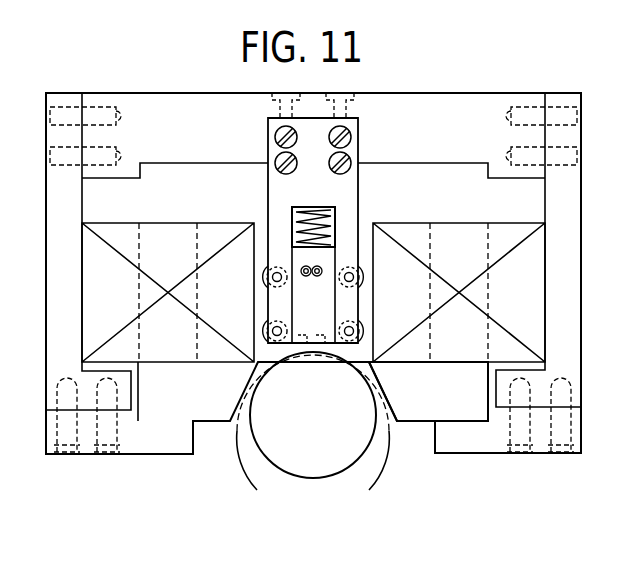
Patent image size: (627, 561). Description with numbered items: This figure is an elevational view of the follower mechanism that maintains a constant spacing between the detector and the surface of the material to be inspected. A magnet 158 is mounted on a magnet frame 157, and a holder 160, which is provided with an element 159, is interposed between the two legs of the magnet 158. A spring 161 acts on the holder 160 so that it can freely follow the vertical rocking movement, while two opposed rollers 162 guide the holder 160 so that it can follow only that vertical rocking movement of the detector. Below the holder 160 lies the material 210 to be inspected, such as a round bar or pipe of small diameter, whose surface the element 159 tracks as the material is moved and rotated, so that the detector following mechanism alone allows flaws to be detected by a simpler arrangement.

The magnet frame 157 is at (183, 112).
The magnet 158 is at (445, 410).
The element 159 is at (303, 347).
The holder 160 is at (276, 303).
The spring 161 is at (337, 215).
The rollers 162 is at (260, 272).
The material to be inspected 210 is at (357, 438).